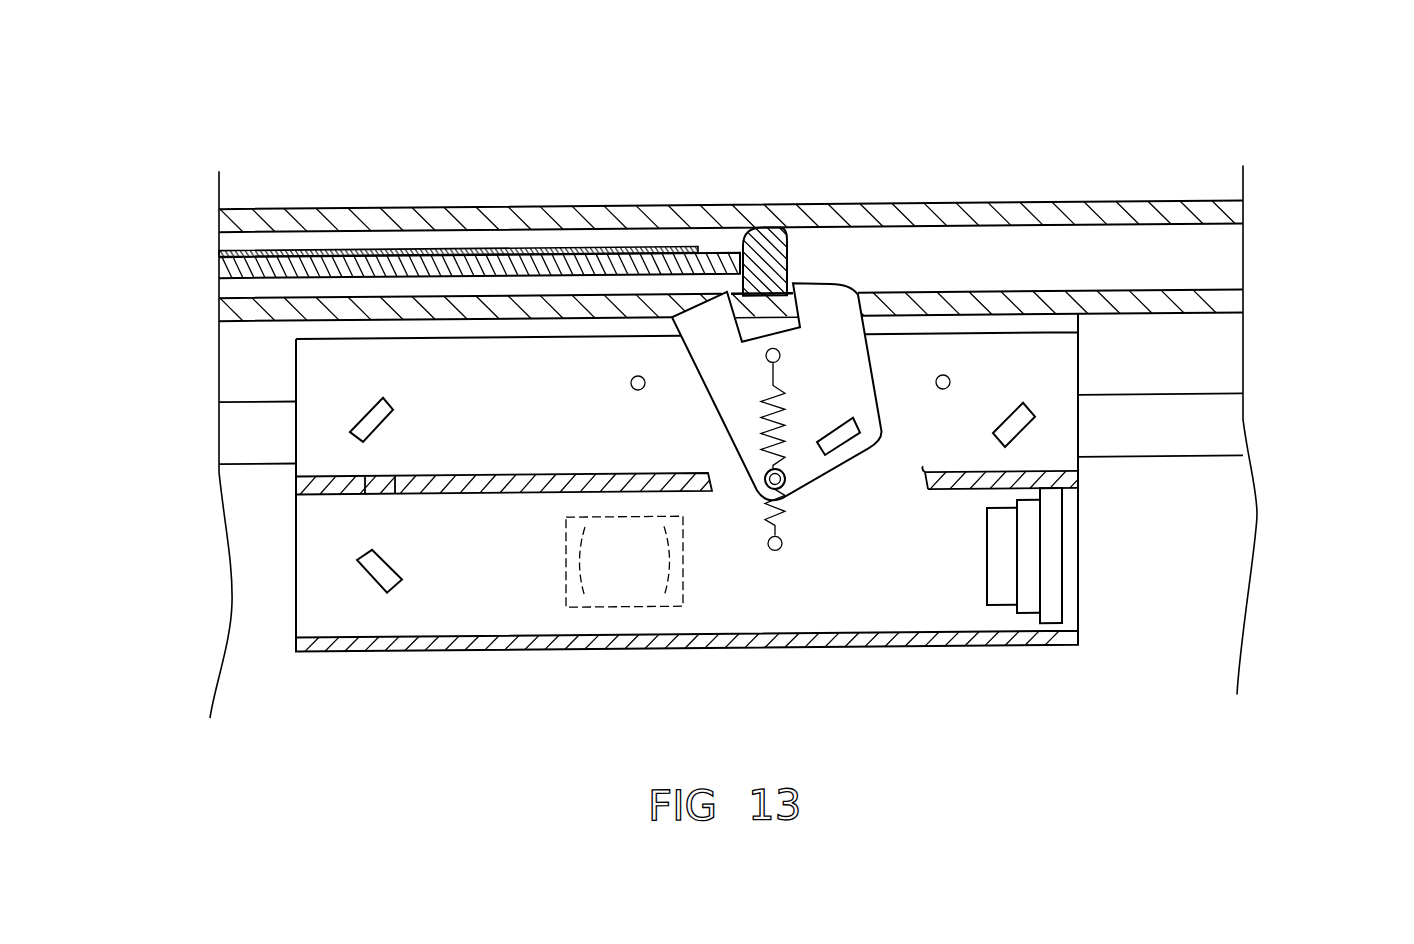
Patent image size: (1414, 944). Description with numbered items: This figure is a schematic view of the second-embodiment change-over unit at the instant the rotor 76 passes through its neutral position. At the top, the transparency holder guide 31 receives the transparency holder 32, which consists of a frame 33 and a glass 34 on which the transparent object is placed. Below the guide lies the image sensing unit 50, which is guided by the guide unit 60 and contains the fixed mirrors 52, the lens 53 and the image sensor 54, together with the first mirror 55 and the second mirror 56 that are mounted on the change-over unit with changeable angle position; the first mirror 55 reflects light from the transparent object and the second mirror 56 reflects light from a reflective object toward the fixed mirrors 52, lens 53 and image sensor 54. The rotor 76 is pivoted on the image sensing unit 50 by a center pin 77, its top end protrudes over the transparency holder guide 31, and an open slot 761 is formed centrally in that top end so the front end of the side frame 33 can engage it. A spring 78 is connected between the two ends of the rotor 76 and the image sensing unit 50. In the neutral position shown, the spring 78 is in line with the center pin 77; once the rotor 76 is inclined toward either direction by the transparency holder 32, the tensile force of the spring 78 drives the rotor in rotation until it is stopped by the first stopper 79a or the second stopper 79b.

The transparency holder guide 31 is at (903, 218).
The transparency holder 32 is at (237, 292).
The frame 33 is at (777, 257).
The glass 34 is at (553, 262).
The image sensing unit 50 is at (475, 608).
The fixed mirrors 52 is at (378, 421).
The lens 53 is at (610, 595).
The image sensor 54 is at (1036, 602).
The first mirror 55 is at (1013, 436).
The second mirror 56 is at (836, 445).
The guide unit 60 is at (1170, 438).
The rotor 76 is at (755, 404).
The open slot 761 is at (755, 343).
The center pin 77 is at (780, 494).
The spring 78 is at (762, 431).
The first stopper 79a is at (950, 388).
The second stopper 79b is at (631, 385).